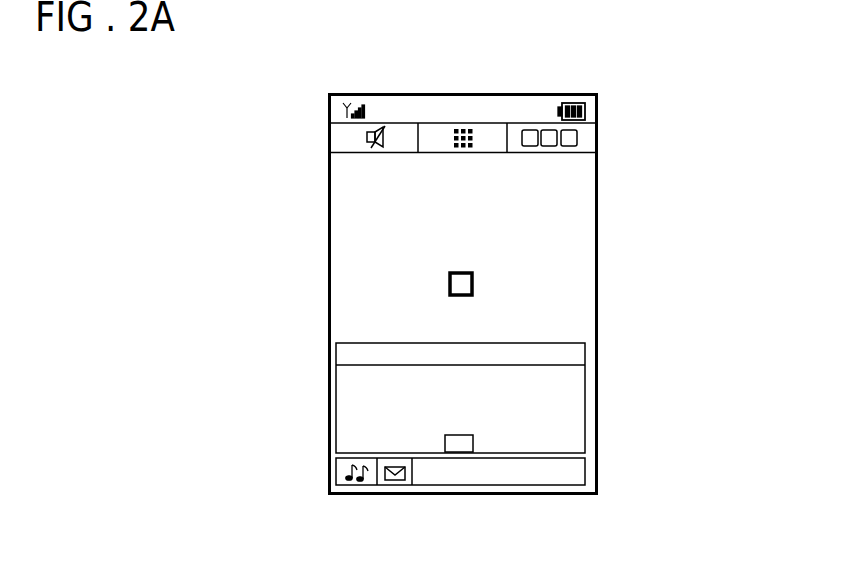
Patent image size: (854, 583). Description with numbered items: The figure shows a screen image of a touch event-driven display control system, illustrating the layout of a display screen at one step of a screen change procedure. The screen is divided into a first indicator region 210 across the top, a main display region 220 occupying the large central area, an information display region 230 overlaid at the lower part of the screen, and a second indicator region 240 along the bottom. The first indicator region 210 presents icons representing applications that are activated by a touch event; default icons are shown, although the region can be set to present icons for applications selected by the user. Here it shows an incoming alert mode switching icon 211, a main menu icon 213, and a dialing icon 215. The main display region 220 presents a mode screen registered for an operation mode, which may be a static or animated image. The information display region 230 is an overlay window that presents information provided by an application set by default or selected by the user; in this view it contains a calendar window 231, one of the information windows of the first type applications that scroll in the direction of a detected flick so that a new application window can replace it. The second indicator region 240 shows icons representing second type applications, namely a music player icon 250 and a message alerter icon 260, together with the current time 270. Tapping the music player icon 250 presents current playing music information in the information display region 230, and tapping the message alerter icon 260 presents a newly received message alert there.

The first indicator region 210 is at (323, 137).
The incoming alert mode switching icon 211 is at (376, 122).
The main menu icon 213 is at (462, 122).
The dialing icon 215 is at (526, 122).
The main display region 220 is at (575, 203).
The information display region 230 is at (466, 387).
The calendar window 231 is at (573, 408).
The second indicator region 240 is at (323, 468).
The music player icon 250 is at (348, 484).
The message alerter icon 260 is at (400, 478).
The current time 270 is at (530, 480).